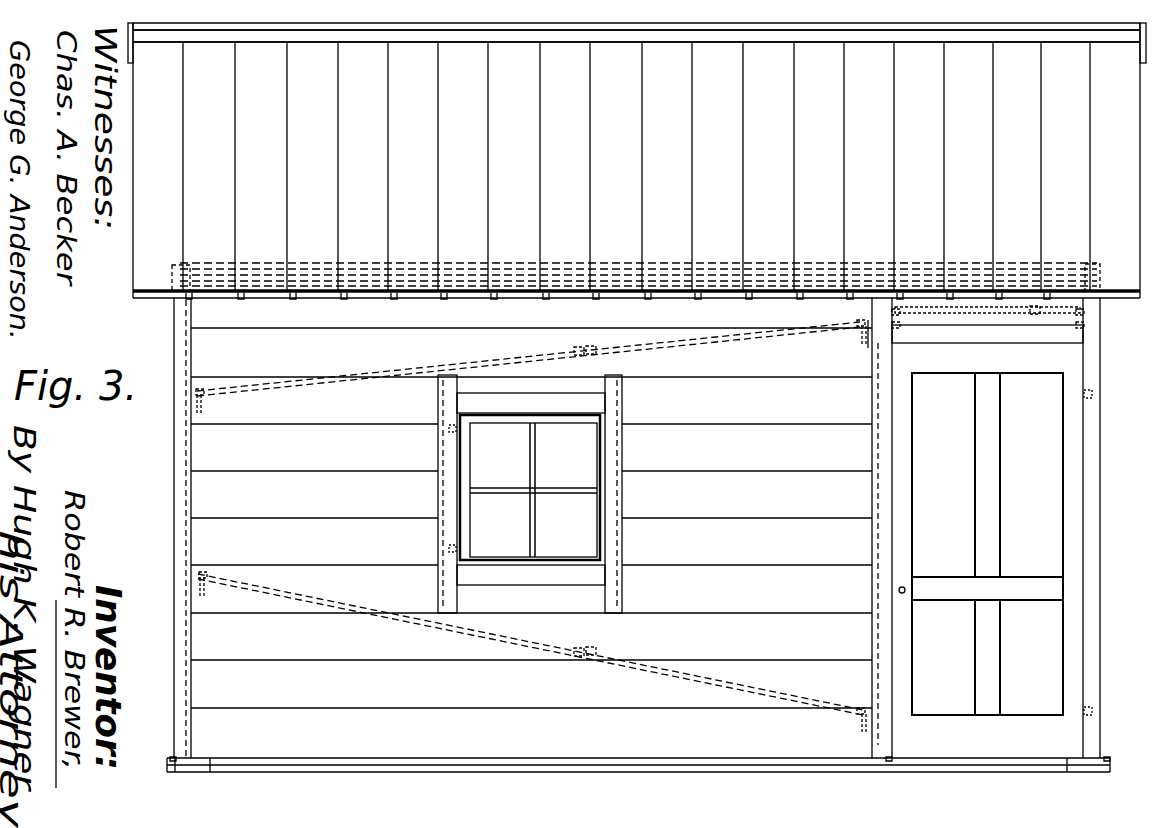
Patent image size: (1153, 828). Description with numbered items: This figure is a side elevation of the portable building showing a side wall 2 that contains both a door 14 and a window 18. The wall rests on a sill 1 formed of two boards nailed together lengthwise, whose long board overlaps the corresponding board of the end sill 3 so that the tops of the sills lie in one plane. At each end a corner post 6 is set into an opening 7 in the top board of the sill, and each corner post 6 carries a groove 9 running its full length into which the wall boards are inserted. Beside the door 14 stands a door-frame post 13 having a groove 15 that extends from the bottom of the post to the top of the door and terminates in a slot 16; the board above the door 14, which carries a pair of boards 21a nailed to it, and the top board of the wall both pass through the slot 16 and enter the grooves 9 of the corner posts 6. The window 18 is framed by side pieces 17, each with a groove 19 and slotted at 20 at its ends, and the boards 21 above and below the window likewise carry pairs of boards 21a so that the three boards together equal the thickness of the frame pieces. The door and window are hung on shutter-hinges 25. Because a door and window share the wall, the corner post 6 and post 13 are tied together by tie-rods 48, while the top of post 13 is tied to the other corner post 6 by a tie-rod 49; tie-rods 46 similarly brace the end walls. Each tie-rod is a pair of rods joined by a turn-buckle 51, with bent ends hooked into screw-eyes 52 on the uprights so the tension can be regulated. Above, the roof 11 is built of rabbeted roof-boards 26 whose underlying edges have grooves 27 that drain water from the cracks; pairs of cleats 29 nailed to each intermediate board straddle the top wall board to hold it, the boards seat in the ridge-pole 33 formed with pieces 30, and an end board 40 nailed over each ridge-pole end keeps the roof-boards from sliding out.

The sill 1 is at (272, 760).
The side wall 2 is at (531, 518).
The end sill 3 is at (194, 762).
The corner post 6 is at (176, 678).
The opening 7 is at (168, 760).
The groove 9 is at (190, 630).
The roof 11 is at (637, 176).
The door-frame post 13 is at (895, 727).
The door 14 is at (983, 526).
The groove 15 is at (885, 640).
The slot 16 is at (876, 328).
The window-frame side piece 17 is at (457, 462).
The window 18 is at (500, 525).
The groove 19 is at (440, 538).
The slot 20 is at (445, 426).
The board 21 is at (671, 520).
The pair of boards 21a is at (527, 407).
The shutter-hinge 25 is at (452, 548).
The roof-board 26 is at (636, 166).
The groove 27 is at (290, 299).
The cleat 29 is at (212, 281).
The ridge piece 30 is at (207, 32).
The ridge-pole 33 is at (401, 36).
The end board 40 is at (131, 50).
The tie-rod 46 is at (1142, 47).
The tie-rod 48 is at (660, 345).
The tie-rod 49 is at (1035, 314).
The turn-buckle 51 is at (592, 348).
The screw-eye 52 is at (860, 340).